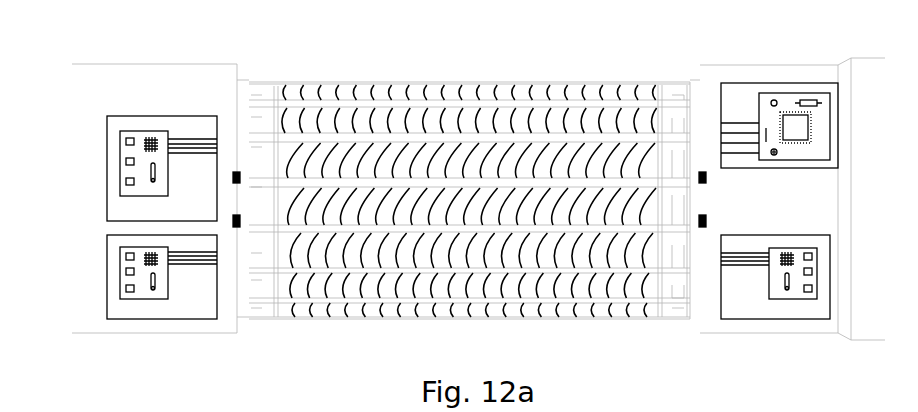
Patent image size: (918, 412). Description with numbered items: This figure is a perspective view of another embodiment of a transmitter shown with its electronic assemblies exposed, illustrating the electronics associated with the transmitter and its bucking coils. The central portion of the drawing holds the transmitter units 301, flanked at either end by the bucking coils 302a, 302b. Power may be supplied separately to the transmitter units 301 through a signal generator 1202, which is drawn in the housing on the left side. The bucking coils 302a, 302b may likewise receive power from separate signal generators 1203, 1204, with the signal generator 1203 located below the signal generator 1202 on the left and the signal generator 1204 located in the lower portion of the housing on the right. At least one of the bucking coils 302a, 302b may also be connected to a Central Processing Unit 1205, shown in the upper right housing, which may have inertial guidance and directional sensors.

The transmitter units 301 is at (487, 92).
The bucking coil 302a is at (262, 90).
The bucking coil 302b is at (672, 92).
The signal generator 1202 is at (168, 122).
The signal generator 1203 is at (107, 268).
The signal generator 1204 is at (800, 312).
The Central Processing Unit 1205 is at (776, 93).